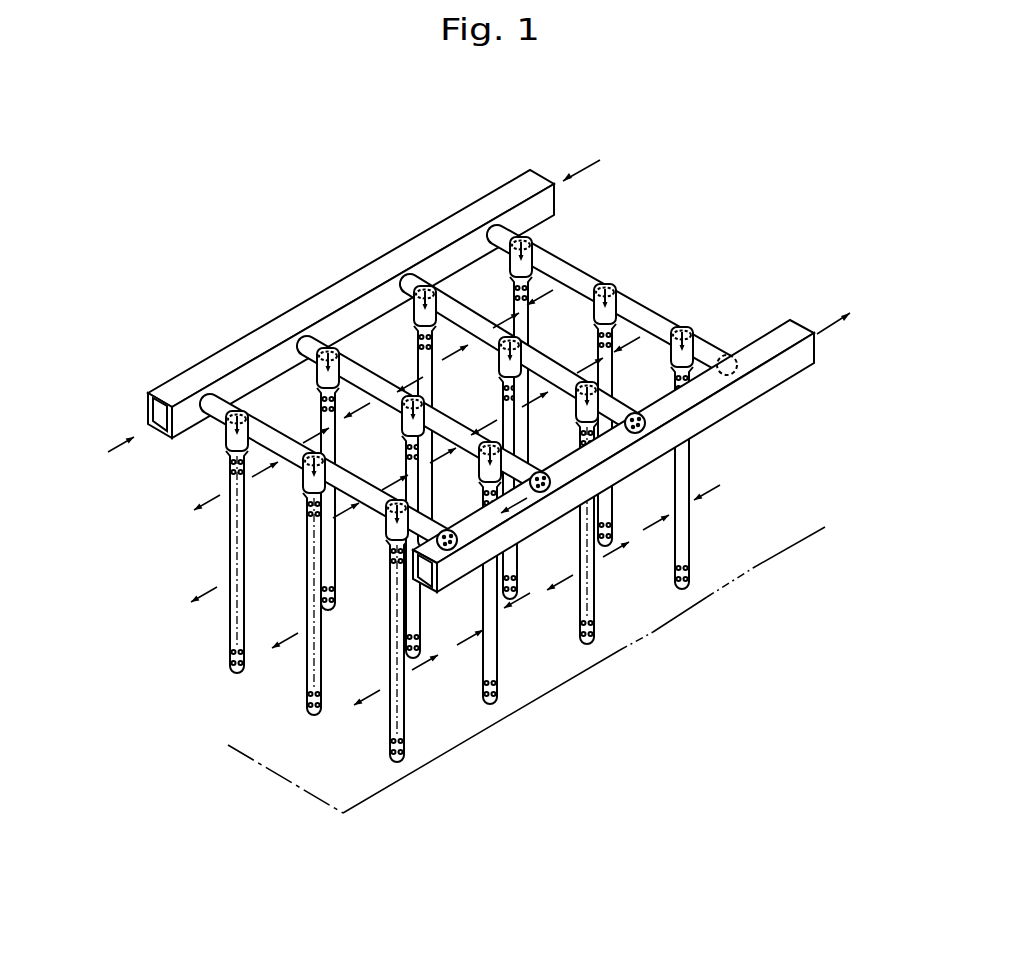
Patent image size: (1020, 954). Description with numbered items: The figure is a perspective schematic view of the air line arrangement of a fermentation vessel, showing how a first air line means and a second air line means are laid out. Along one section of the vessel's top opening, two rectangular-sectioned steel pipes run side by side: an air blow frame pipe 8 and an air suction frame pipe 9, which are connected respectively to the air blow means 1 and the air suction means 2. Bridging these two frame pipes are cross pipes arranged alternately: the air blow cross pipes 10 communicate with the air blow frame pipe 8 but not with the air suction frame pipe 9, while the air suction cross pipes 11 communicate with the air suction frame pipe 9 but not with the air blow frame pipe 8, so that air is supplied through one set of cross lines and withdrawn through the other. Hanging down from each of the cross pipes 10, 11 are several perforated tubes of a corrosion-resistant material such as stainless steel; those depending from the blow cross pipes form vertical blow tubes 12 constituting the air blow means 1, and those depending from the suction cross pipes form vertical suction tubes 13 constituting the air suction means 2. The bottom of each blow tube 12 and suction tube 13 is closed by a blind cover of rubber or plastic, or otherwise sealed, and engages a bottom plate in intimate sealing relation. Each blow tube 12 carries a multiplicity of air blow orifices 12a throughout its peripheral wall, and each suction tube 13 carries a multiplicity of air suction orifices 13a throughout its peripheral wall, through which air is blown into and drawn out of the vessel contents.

The air blow means 1 is at (213, 443).
The air suction means 2 is at (310, 385).
The air blow frame pipe 8 is at (493, 196).
The air suction frame pipe 9 is at (787, 322).
The air blow cross pipe 10 is at (538, 363).
The air suction cross pipe 11 is at (633, 312).
The vertical blow tube 12 is at (230, 538).
The air blow orifice 12a is at (230, 650).
The vertical suction tube 13 is at (227, 460).
The air suction orifice 13a is at (500, 685).